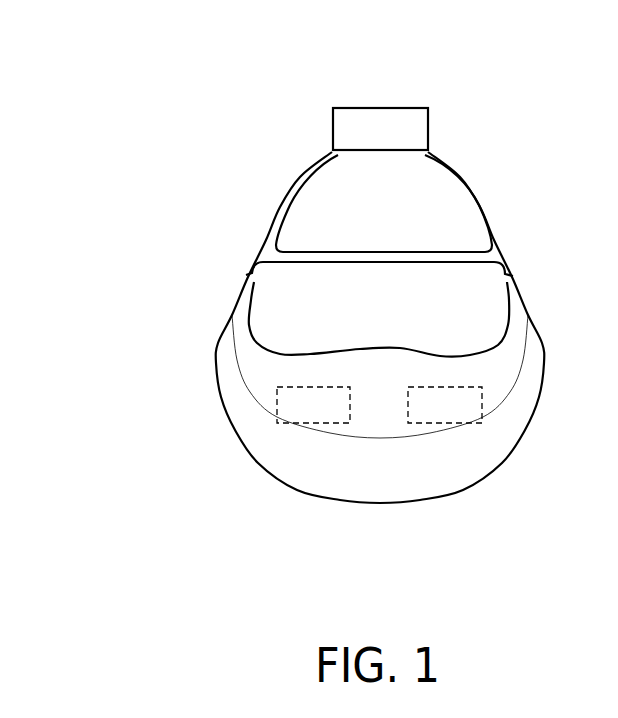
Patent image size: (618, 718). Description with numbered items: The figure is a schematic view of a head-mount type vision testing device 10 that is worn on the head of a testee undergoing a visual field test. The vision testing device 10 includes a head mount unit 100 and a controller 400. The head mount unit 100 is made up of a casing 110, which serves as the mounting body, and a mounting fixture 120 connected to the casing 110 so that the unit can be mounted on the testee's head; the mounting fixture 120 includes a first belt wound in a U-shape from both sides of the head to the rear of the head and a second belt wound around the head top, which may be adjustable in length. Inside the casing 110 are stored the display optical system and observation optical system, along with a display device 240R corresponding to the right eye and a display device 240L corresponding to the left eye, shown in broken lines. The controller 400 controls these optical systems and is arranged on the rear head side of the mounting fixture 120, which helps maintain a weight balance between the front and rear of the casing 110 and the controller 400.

The vision testing device 10 is at (600, 603).
The head mount (HM) unit 100 is at (122, 175).
The casing 110 is at (220, 340).
The mounting fixture 120 is at (275, 218).
The display device 240R is at (313, 423).
The display device 240L is at (442, 423).
The controller 400 is at (403, 108).